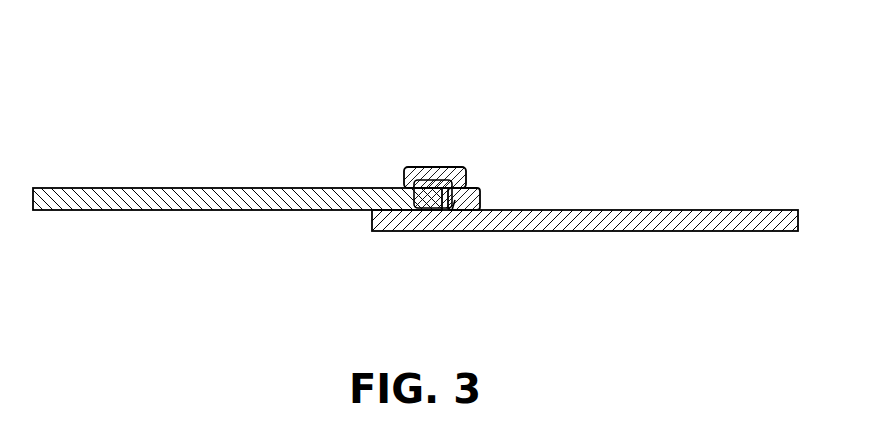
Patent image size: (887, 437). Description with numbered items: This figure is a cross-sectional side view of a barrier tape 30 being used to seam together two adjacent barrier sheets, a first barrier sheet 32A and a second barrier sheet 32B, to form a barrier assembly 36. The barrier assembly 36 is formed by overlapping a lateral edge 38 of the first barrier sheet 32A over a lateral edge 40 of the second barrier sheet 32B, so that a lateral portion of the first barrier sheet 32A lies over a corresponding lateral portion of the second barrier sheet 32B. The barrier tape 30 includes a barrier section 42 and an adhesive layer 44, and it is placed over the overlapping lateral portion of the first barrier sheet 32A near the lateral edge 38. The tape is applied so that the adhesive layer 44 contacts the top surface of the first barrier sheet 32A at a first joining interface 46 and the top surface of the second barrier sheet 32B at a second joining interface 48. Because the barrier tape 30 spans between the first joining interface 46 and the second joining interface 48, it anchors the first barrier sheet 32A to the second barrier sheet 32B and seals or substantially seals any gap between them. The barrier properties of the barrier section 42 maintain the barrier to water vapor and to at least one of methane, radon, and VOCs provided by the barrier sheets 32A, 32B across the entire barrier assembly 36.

The barrier tape 30 is at (468, 148).
The first barrier sheet 32A is at (193, 188).
The second barrier sheet 32B is at (692, 220).
The barrier assembly 36 is at (628, 98).
The lateral edge of the first barrier sheet 38 is at (470, 195).
The lateral edge of the second barrier sheet 40 is at (372, 220).
The barrier section 42 is at (449, 182).
The adhesive layer 44 is at (452, 210).
The first joining interface 46 is at (407, 168).
The second joining interface 48 is at (472, 217).